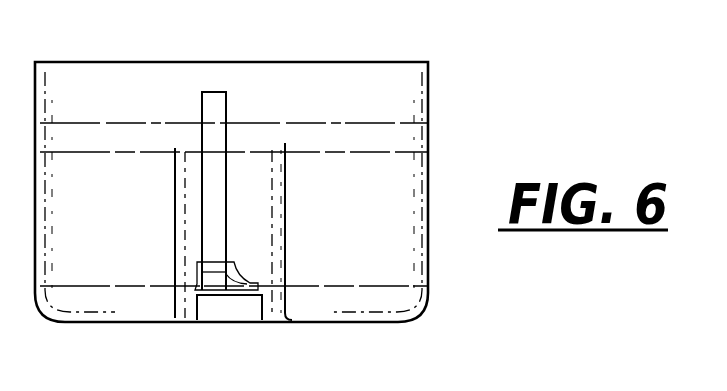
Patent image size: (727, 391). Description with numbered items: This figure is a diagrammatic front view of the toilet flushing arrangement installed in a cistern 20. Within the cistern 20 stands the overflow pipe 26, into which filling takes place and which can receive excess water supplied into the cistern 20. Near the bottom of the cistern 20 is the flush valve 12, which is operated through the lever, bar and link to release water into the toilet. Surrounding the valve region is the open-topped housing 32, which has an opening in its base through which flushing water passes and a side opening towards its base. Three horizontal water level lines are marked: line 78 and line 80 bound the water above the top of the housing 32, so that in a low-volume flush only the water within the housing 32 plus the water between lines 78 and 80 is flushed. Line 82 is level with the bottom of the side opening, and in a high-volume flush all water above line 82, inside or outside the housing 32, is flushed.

The cistern 20 is at (428, 83).
The line 78 is at (428, 120).
The line 80 is at (428, 150).
The line 82 is at (428, 282).
The overflow pipe 26 is at (215, 105).
The flush valve 12 is at (230, 313).
The housing 32 is at (287, 237).